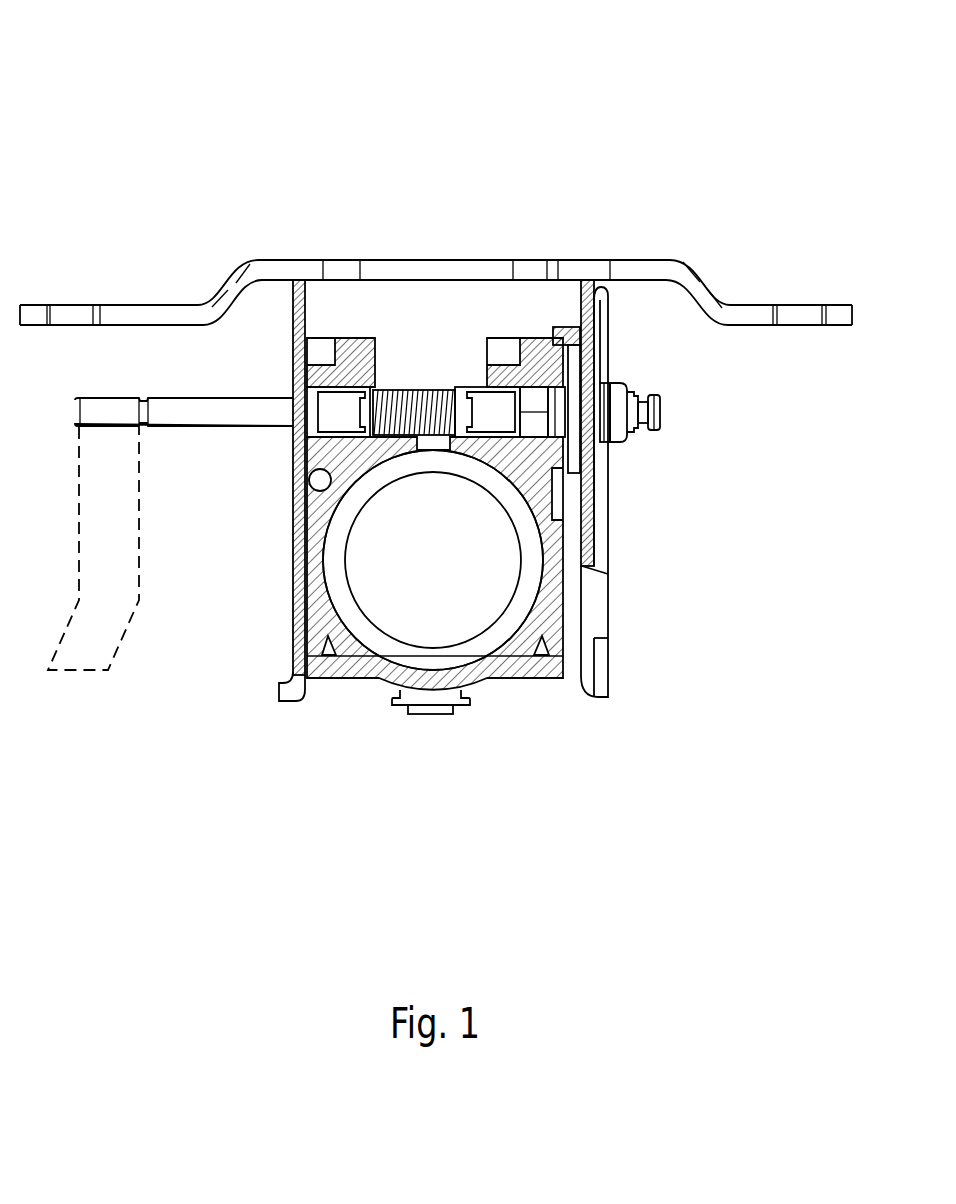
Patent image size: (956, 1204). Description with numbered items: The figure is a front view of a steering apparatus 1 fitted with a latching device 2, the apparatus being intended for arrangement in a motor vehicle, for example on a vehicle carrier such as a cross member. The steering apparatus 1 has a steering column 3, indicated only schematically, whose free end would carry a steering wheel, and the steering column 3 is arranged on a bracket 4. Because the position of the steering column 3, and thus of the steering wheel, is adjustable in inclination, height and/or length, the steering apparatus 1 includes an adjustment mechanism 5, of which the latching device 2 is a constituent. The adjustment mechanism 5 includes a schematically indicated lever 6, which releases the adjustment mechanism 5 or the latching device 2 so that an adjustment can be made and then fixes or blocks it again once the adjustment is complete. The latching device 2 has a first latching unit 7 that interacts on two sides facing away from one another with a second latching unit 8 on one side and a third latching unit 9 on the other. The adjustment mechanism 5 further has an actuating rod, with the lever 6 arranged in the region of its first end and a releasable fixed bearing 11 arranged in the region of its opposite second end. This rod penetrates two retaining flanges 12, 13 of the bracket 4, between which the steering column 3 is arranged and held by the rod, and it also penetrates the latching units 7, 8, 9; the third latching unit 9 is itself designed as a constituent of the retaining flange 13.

The steering apparatus 1 is at (138, 110).
The latching device 2 is at (436, 281).
The steering column 3 is at (481, 640).
The bracket 4 is at (298, 277).
The adjustment mechanism 5 is at (688, 412).
The lever 6 is at (113, 542).
The first latching unit 7 is at (569, 318).
The second latching unit 8 is at (541, 355).
The third latching unit 9 is at (616, 366).
The releasable fixed bearing 11 is at (628, 512).
The retaining flange 12 is at (278, 702).
The retaining flange 13 is at (603, 699).